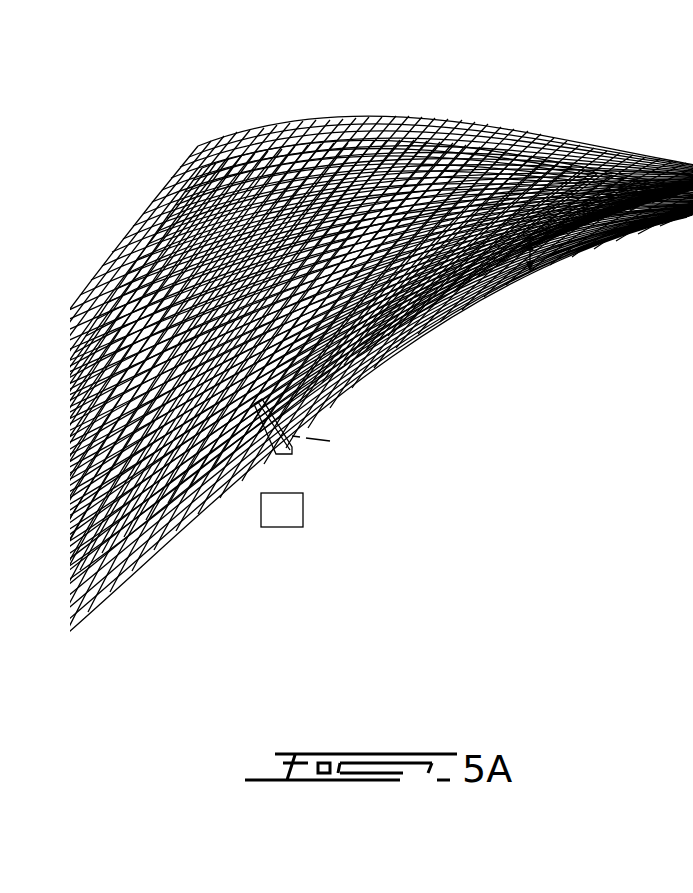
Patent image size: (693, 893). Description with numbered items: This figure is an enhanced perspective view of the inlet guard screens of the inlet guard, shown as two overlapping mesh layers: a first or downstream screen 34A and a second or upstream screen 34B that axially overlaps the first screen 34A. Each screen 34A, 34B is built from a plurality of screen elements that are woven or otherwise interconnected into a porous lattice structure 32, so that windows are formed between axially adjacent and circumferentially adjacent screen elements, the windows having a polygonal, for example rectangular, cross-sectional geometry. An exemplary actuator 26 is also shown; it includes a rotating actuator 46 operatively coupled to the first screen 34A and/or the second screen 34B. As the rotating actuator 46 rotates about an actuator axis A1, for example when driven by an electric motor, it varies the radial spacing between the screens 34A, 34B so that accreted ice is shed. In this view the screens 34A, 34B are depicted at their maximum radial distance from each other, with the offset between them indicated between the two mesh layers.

The composite skin panel 32 is at (190, 200).
The second screen 34B is at (300, 120).
The first screen 34A is at (165, 546).
The rotating actuator 46 is at (298, 450).
The actuator 26 is at (282, 493).
The actuator axis A1 is at (78, 387).